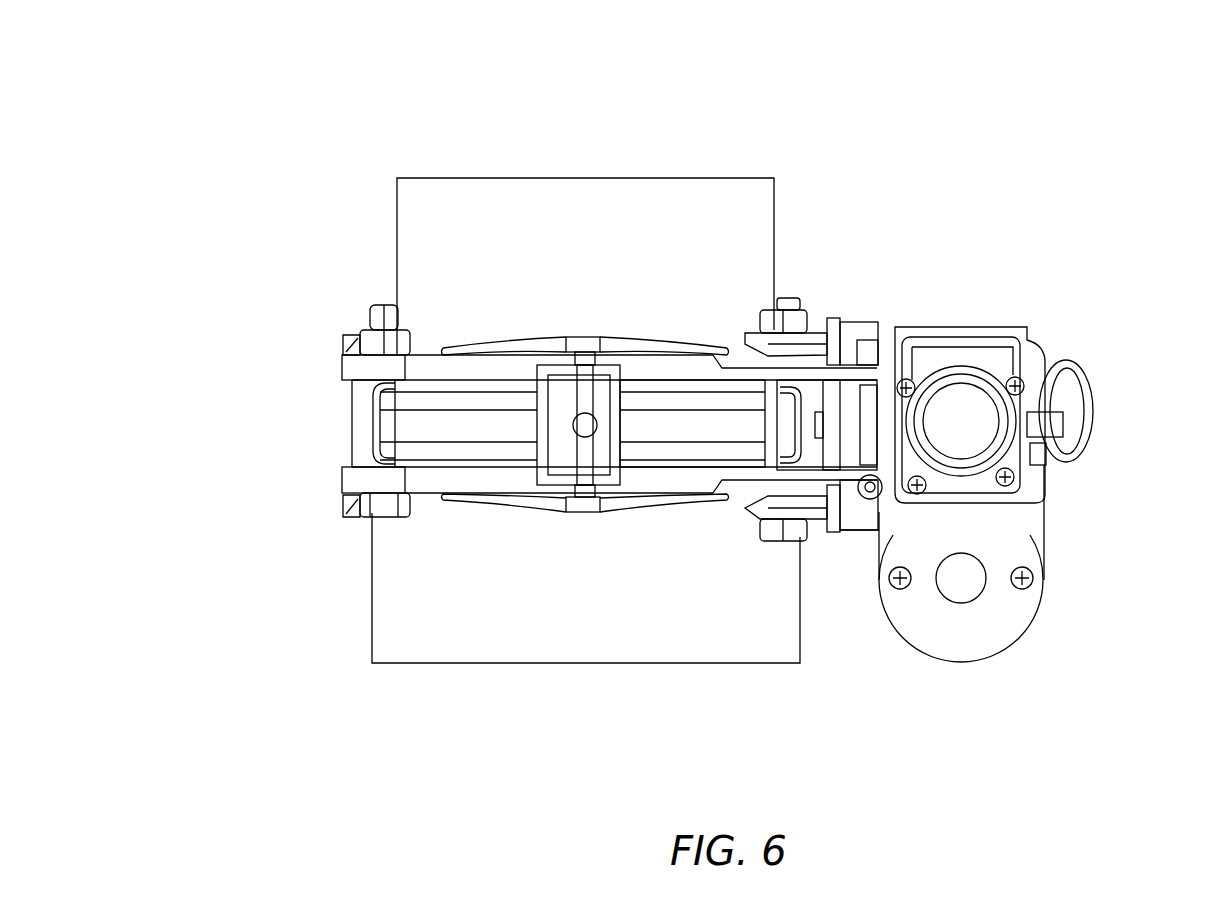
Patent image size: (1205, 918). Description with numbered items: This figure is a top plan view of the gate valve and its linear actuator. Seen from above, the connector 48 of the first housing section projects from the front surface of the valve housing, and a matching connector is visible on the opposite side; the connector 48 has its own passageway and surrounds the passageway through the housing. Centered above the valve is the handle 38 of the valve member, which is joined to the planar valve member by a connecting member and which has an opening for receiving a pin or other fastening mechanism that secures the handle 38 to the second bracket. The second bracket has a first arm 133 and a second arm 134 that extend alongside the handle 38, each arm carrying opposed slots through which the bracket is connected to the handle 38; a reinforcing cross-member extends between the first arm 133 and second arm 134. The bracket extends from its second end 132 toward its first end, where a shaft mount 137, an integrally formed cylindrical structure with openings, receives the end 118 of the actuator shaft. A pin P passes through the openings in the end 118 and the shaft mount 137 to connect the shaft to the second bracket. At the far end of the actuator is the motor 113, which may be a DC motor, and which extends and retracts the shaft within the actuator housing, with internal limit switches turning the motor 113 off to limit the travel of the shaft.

The connector 48 is at (547, 202).
The handle 38 is at (543, 393).
The second end 132 is at (542, 425).
The pin P is at (585, 335).
The second arm 134 is at (680, 378).
The first arm 133 is at (643, 497).
The shaft mount 137 is at (985, 378).
The end 118 is at (982, 420).
The motor 113 is at (1015, 642).